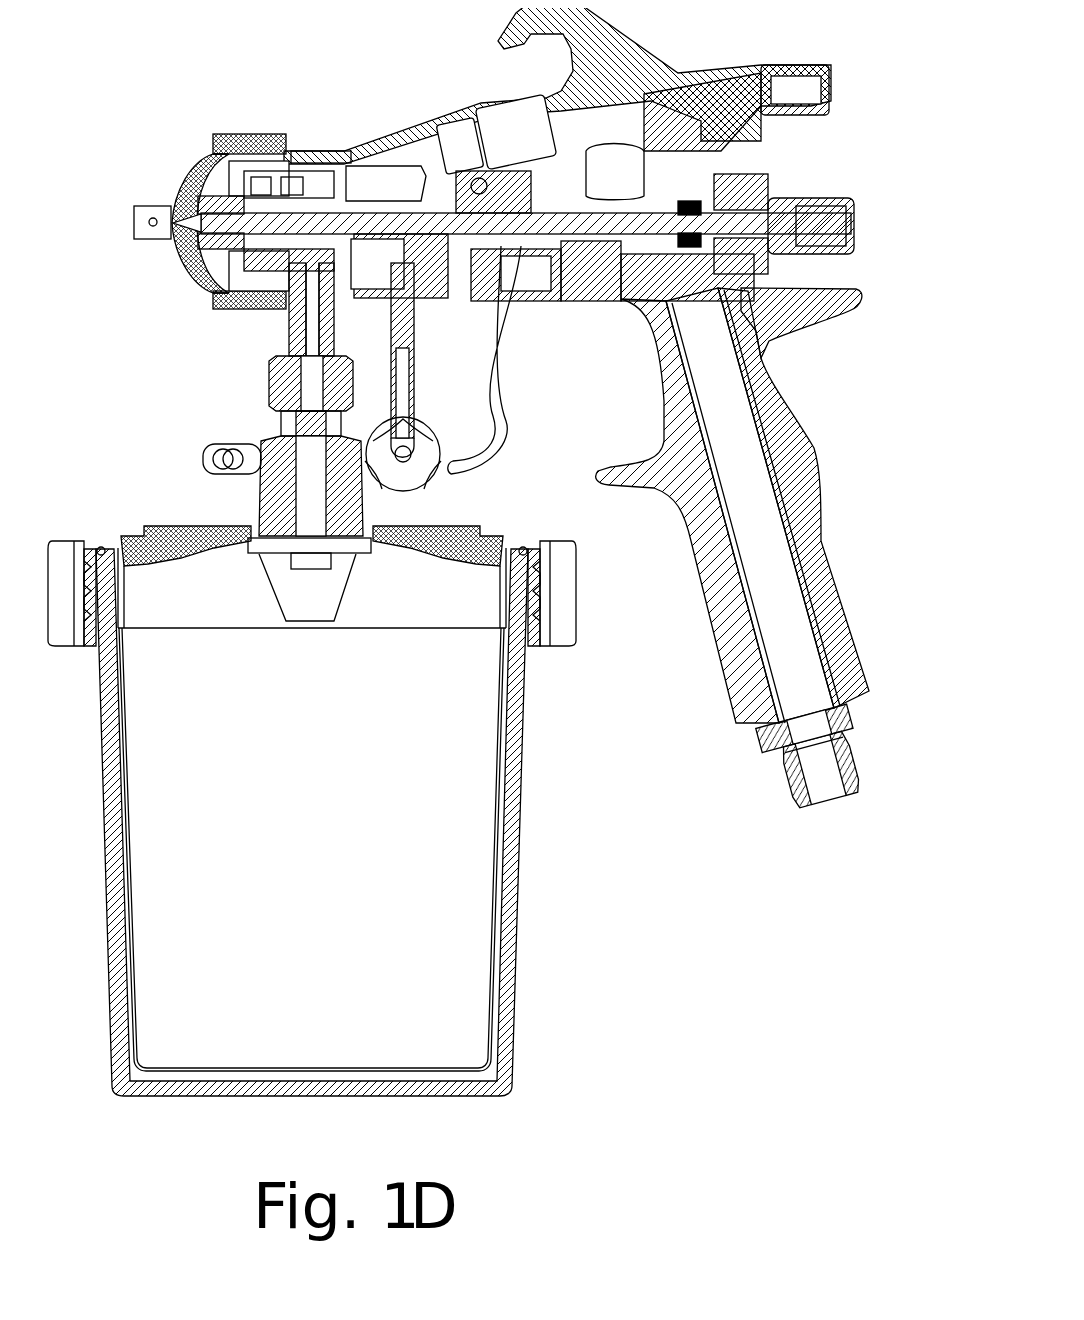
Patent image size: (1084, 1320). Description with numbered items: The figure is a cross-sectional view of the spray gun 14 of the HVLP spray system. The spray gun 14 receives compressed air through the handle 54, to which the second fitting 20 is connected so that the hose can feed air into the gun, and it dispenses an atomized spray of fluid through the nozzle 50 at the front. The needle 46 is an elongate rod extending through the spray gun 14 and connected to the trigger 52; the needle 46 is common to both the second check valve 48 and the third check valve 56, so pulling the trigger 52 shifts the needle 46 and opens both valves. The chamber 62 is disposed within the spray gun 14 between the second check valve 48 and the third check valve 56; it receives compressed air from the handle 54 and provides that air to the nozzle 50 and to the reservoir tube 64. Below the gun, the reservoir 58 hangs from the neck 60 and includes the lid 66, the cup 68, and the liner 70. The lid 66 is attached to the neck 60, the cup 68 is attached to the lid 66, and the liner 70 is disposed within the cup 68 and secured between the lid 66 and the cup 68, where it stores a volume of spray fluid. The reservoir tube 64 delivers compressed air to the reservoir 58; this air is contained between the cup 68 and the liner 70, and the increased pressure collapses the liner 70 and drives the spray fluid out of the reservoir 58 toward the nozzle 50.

The spray gun 14 is at (727, 828).
The second fitting 20 is at (860, 768).
The needle 46 is at (303, 218).
The second check valve 48 is at (647, 298).
The nozzle 50 is at (170, 220).
The trigger 52 is at (493, 390).
The handle 54 is at (793, 460).
The third check valve 56 is at (172, 200).
The reservoir 58 is at (552, 1042).
The neck 60 is at (287, 318).
The chamber 62 is at (467, 145).
The reservoir tube 64 is at (417, 357).
The lid 66 is at (488, 548).
The cup 68 is at (517, 898).
The liner 70 is at (500, 782).